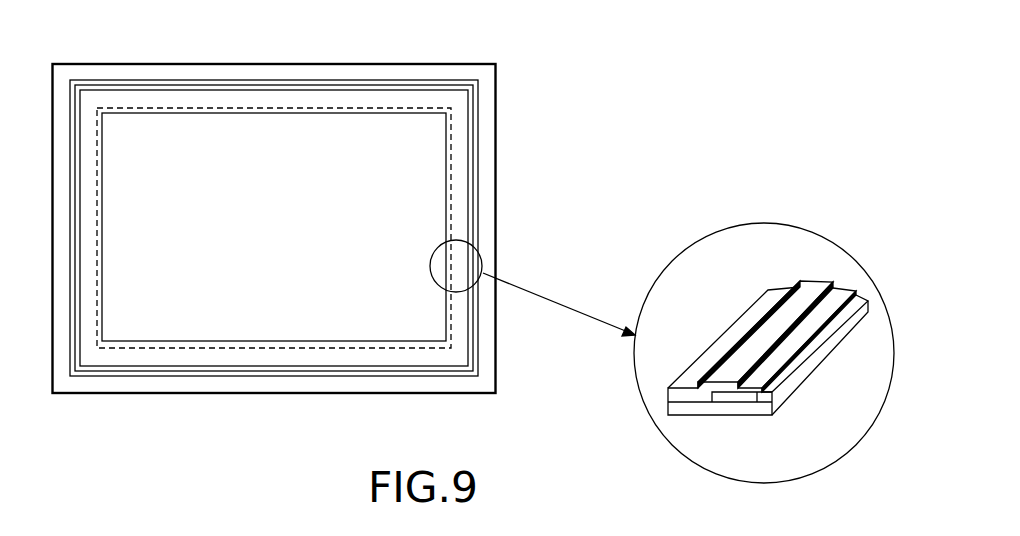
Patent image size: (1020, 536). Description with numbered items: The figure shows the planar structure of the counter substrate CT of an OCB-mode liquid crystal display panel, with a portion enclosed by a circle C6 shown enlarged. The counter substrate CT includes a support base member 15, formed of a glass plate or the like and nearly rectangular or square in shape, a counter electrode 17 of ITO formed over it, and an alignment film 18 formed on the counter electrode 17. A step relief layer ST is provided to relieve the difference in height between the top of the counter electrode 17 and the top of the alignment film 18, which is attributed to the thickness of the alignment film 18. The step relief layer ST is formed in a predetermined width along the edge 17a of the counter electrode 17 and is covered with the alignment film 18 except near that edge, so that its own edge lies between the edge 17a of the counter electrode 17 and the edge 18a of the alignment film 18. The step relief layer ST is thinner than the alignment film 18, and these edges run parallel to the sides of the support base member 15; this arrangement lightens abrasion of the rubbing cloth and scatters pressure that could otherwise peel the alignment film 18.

The support base member 15 is at (384, 64).
The counter substrate CT is at (292, 196).
The counter electrode 17 is at (479, 108).
The edge of the counter electrode 17a is at (797, 380).
The alignment film 18 is at (460, 198).
The edge of the alignment film 18a is at (836, 283).
The step relief layer ST is at (474, 140).
The circle C6 is at (483, 262).